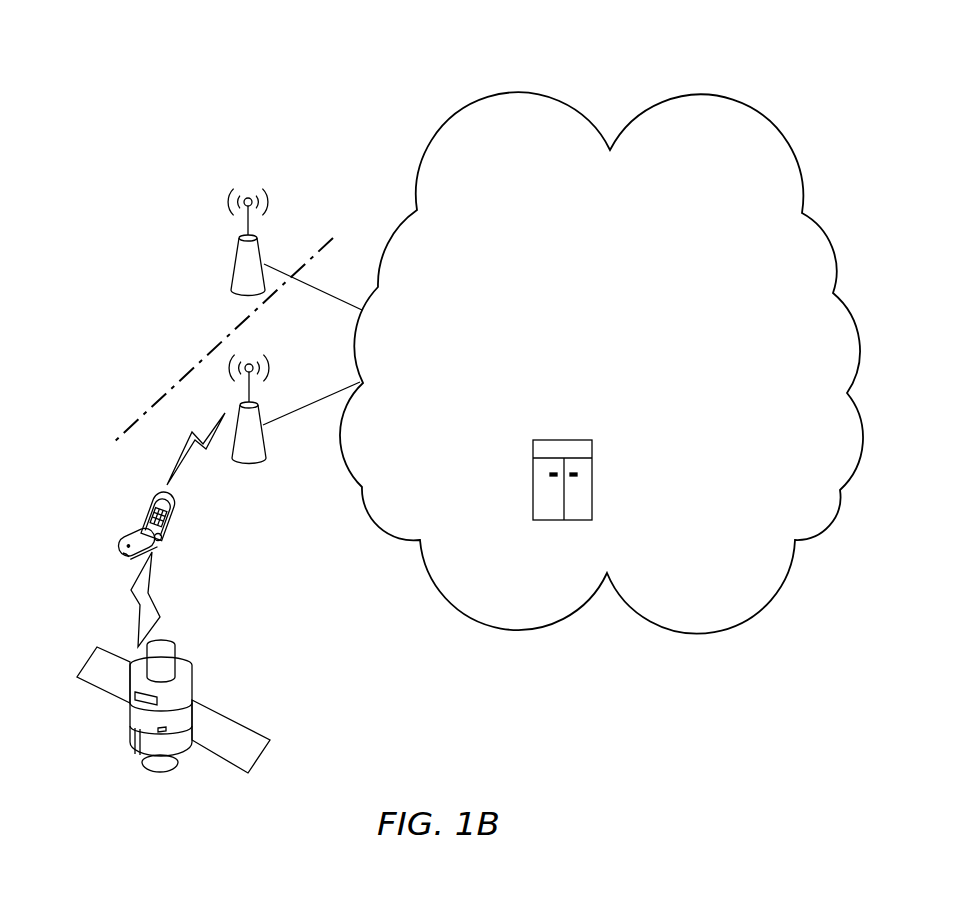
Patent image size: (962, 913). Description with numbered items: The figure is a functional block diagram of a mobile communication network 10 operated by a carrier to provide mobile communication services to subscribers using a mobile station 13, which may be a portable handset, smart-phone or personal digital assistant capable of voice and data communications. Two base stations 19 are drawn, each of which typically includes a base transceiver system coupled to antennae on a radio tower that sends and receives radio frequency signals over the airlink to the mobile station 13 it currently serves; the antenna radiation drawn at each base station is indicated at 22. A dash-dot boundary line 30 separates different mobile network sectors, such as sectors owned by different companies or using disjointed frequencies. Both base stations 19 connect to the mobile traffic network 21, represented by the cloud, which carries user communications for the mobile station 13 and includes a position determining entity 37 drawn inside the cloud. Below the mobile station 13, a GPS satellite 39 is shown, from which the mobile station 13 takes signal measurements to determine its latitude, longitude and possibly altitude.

The mobile communication network 10 is at (318, 88).
The mobile station 13 is at (142, 525).
The base station 19 is at (257, 238).
The mobile traffic network 21 is at (616, 233).
The antenna / wireless link 22 is at (220, 213).
The boundary line 30 is at (107, 442).
The position determining entity 37 is at (533, 468).
The GPS satellite 39 is at (160, 769).